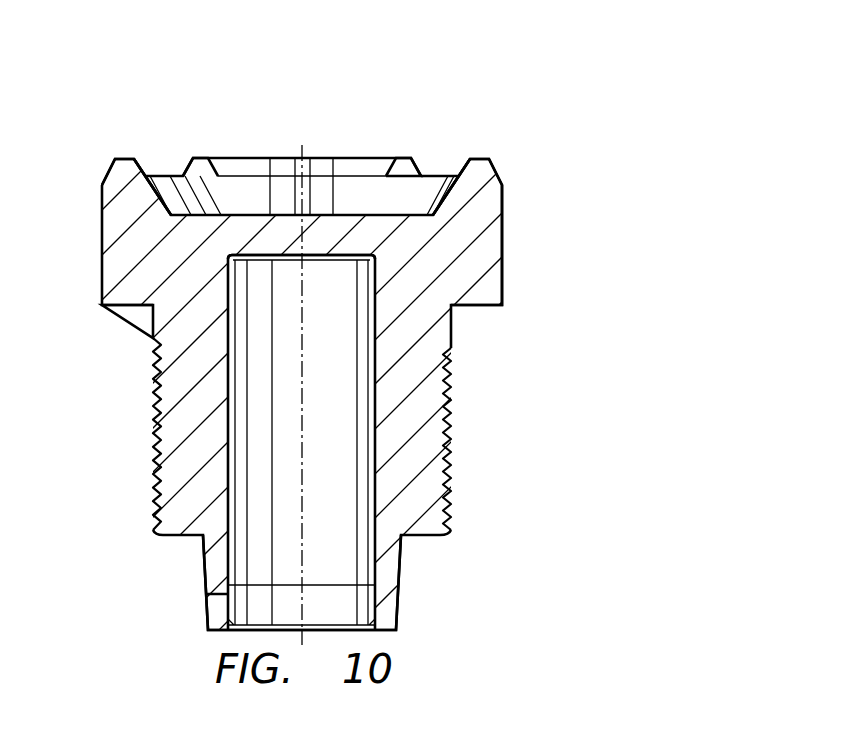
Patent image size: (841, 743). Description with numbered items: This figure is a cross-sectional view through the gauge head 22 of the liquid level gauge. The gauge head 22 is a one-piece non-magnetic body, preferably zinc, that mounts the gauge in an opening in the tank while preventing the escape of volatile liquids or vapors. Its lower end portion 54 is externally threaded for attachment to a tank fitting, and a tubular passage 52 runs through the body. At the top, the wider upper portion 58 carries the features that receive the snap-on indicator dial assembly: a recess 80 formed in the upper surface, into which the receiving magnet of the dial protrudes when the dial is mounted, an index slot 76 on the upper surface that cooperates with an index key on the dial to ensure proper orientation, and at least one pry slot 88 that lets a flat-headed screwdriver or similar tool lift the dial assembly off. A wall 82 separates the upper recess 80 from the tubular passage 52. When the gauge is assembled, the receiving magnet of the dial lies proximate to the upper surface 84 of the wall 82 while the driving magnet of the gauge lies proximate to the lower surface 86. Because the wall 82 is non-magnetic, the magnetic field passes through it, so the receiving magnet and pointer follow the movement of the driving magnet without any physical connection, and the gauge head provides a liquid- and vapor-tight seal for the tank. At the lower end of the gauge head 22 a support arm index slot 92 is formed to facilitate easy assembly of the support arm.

The gauge head 22 is at (457, 100).
The upper portion 58 is at (102, 225).
The lower end portion 54 is at (150, 434).
The tubular passage 52 is at (372, 483).
The lower surface 86 is at (338, 258).
The support arm index slot 92 is at (208, 607).
The index slot 76 is at (316, 172).
The upper surface 84 is at (240, 215).
The pry slot 88 is at (163, 176).
The recess 80 is at (420, 172).
The wall 82 is at (403, 193).